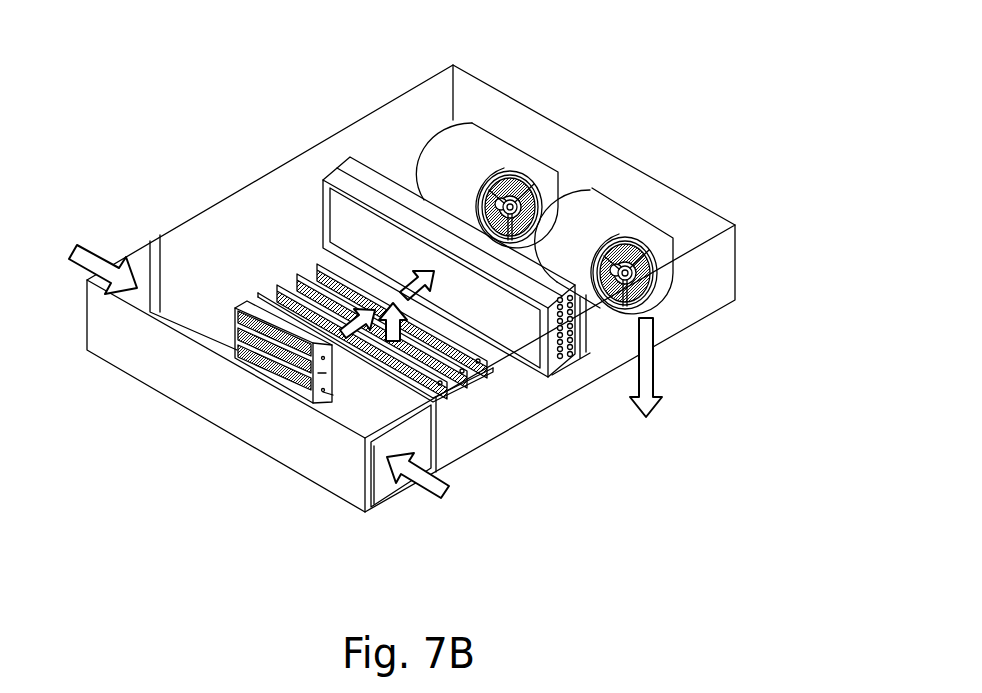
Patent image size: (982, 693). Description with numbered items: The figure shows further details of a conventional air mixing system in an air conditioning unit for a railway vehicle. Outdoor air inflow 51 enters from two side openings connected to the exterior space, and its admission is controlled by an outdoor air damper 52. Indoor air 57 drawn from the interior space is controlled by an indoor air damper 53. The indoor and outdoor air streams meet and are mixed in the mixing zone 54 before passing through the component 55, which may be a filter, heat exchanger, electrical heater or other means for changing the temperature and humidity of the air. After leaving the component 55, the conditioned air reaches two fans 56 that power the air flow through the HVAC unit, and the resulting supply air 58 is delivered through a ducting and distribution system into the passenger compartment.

The outdoor air inflow 51 is at (446, 492).
The outdoor air damper 52 is at (243, 310).
The indoor air damper 53 is at (470, 382).
The mixing zone 54 is at (390, 294).
The component 55 is at (343, 175).
The fans 56 is at (635, 278).
The indoor air stream 57 is at (403, 322).
The supply air outlet 58 is at (644, 378).